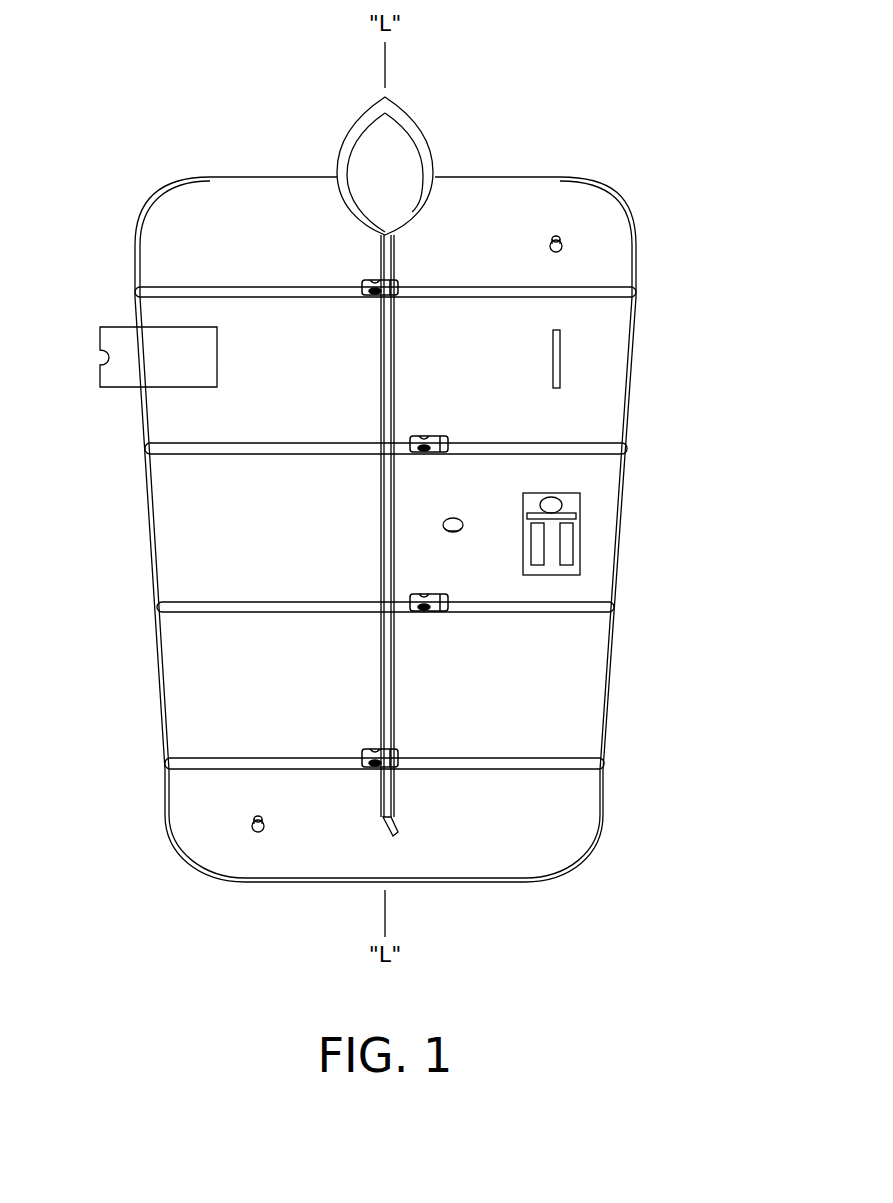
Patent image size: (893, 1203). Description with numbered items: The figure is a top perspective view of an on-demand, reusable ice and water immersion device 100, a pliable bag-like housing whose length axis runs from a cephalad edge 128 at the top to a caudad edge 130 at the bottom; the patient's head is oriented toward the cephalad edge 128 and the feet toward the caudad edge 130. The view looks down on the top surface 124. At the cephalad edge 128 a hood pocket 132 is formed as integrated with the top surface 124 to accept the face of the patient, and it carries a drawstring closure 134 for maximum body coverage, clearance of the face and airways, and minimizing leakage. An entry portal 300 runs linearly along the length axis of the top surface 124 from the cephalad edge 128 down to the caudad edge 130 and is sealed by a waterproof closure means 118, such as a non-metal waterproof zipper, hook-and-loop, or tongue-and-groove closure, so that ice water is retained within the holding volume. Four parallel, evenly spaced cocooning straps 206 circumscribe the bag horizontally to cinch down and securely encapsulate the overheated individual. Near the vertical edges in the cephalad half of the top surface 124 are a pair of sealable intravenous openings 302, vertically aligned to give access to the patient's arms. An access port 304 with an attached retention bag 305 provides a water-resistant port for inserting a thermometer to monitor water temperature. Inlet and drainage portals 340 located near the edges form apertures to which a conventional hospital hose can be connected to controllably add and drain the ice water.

The on-demand, reusable ice and water immersion device 100 is at (398, 522).
The waterproof closure means 118 is at (398, 288).
The top surface 124 is at (497, 408).
The cephalad edge 128 is at (600, 186).
The caudad edge 130 is at (512, 883).
The hood pocket 132 is at (317, 160).
The drawstring closure 134 is at (340, 197).
The cocooning straps 206 is at (205, 612).
The entry portal 300 is at (381, 481).
The intravenous (IV) opening 302 is at (142, 367).
The access port 304 is at (451, 518).
The retention bag 305 is at (574, 557).
The inlet and drainage portals 340 is at (565, 243).